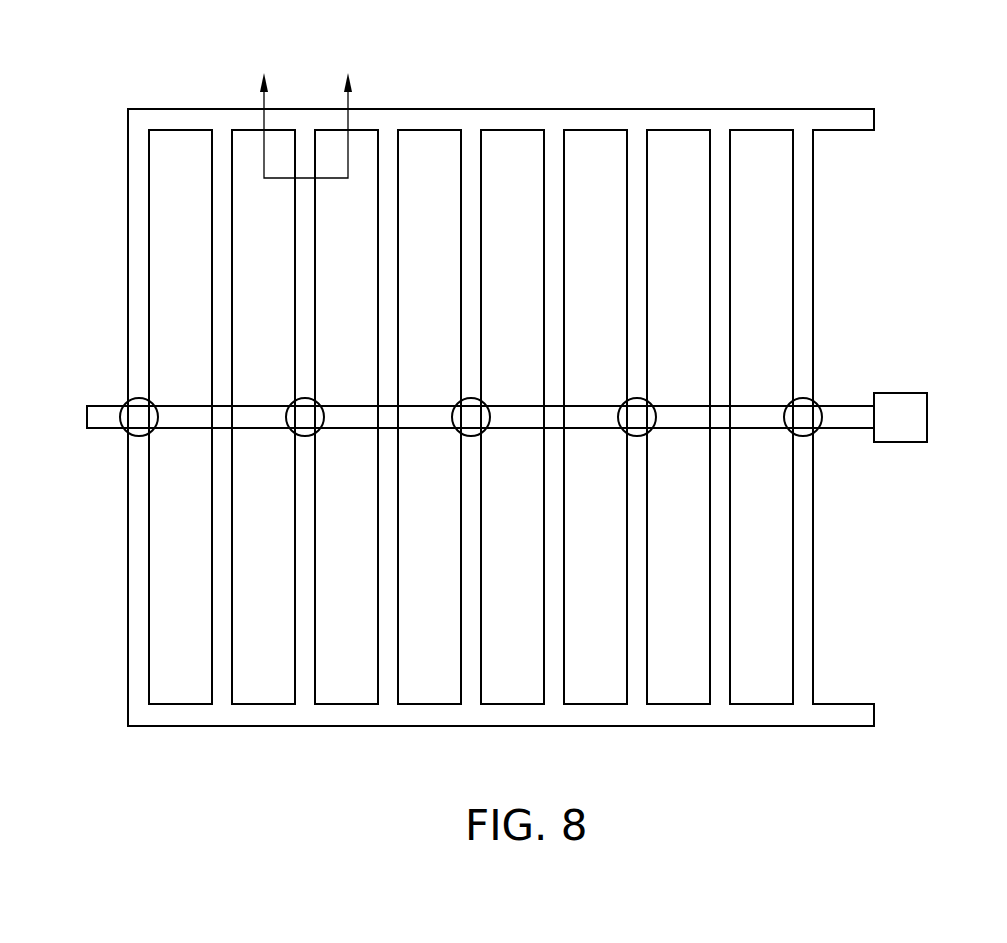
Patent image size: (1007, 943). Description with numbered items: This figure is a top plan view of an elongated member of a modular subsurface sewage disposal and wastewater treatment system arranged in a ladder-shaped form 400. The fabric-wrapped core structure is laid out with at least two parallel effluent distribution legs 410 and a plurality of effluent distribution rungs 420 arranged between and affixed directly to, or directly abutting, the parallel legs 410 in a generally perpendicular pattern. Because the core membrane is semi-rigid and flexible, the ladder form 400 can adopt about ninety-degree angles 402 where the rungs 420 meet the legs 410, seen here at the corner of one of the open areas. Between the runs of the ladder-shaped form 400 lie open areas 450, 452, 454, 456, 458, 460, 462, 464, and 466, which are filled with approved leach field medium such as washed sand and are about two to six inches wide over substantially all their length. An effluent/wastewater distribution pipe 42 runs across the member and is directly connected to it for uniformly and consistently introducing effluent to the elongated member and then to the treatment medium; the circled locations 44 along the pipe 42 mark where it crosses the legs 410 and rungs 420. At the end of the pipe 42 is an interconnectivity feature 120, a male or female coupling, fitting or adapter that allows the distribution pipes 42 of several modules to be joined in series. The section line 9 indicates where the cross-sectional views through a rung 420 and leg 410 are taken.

The ladder-shaped form 400 is at (299, 728).
The effluent distribution legs 410 is at (486, 108).
The effluent distribution rungs 420 is at (648, 203).
The ninety-degree angles 402 is at (398, 703).
The open area 450 is at (180, 417).
The open area 452 is at (263, 417).
The open area 454 is at (346, 417).
The open area 456 is at (429, 417).
The open area 458 is at (512, 417).
The open area 460 is at (595, 417).
The open area 462 is at (678, 417).
The open area 464 is at (761, 417).
The open area 466 is at (843, 417).
The effluent/wastewater distribution pipe 42 is at (846, 435).
The joint / connection 44 is at (130, 403).
The interconnectivity feature 120 is at (903, 390).
The section line 9 is at (304, 109).